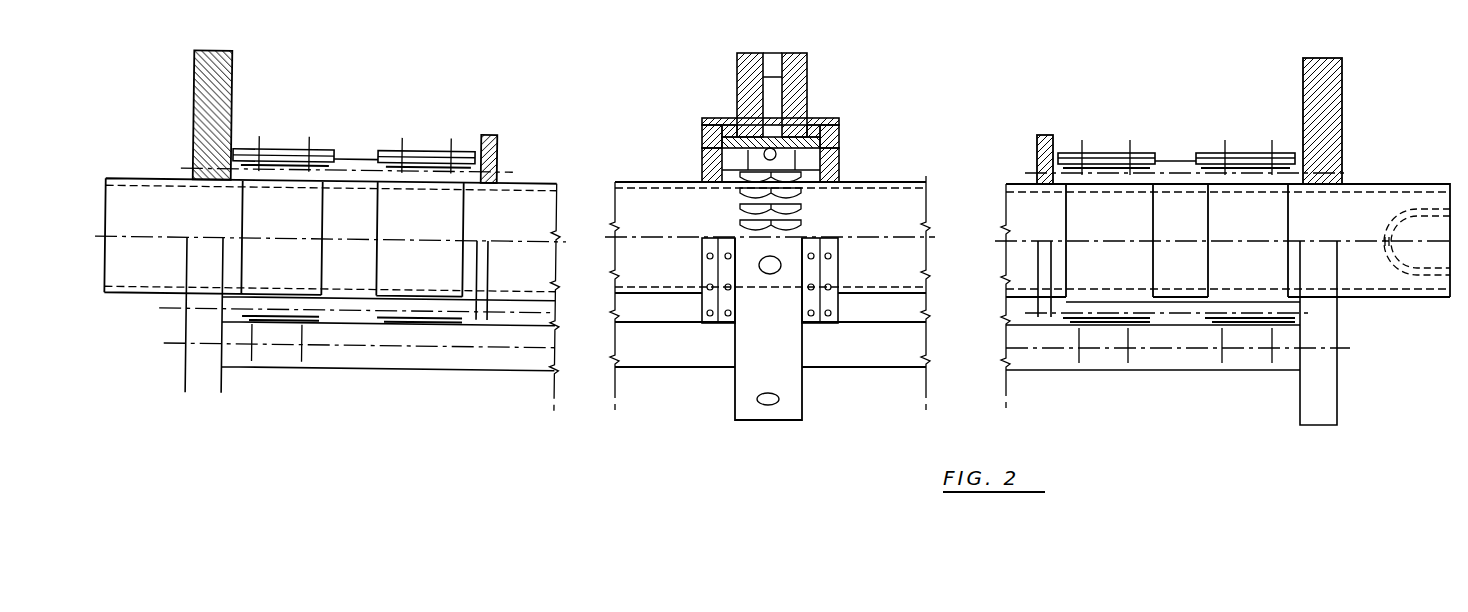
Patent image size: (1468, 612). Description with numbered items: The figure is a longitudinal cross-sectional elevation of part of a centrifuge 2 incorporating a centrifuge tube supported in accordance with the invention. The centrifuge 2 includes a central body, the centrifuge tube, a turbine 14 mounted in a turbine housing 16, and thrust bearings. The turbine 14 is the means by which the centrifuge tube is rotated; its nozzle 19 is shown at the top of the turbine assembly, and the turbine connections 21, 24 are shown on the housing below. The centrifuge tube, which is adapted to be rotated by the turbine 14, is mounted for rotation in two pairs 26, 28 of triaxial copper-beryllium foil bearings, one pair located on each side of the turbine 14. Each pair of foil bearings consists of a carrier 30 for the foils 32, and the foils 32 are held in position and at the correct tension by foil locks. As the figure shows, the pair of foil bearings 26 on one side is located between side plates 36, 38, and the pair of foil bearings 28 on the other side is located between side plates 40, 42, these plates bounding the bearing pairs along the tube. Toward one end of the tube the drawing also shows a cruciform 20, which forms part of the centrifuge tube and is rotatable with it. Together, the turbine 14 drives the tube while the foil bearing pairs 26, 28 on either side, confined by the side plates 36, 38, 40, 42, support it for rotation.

The centrifuge 2 is at (532, 163).
The turbine 14 is at (808, 98).
The turbine housing 16 is at (790, 360).
The nozzle 19 is at (777, 156).
The cruciform 20 is at (1419, 237).
The turbine connection 21 is at (768, 405).
The turbine connection 24 is at (771, 268).
The pair of foil bearings 26 is at (272, 130).
The pair of foil bearings 28 is at (1095, 145).
The carrier 30 is at (355, 158).
The foils 32 is at (283, 263).
The side plate 36 is at (497, 156).
The side plate 38 is at (232, 72).
The side plate 40 is at (1037, 148).
The side plate 42 is at (1343, 90).